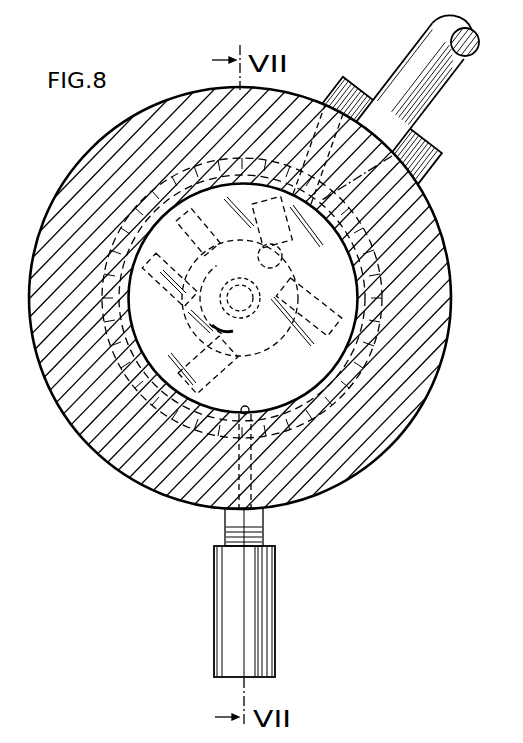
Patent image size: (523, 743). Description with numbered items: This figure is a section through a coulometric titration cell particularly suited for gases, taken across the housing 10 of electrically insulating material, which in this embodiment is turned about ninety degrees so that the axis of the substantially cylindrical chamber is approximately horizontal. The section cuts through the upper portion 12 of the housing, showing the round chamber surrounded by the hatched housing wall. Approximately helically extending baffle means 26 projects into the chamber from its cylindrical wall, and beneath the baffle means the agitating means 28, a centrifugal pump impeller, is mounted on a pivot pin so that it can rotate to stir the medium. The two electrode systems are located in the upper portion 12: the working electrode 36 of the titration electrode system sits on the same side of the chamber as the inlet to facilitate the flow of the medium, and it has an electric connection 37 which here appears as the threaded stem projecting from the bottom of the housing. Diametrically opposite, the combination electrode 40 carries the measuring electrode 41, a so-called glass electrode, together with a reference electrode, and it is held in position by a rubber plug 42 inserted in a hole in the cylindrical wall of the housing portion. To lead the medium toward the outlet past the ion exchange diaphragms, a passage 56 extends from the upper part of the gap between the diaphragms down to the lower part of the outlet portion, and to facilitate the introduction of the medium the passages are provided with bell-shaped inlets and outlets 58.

The housing 10 is at (382, 457).
The upper portion 12 is at (449, 254).
The baffle means 26 is at (197, 208).
The agitating means 28 is at (286, 330).
The working electrode 36 is at (247, 392).
The electric connection 37 is at (275, 592).
The combination electrode 40 is at (403, 58).
The measuring electrode 41 is at (299, 252).
The rubber plug 42 is at (424, 166).
The passage 56 is at (140, 333).
The bell-shaped inlets and outlets 58 is at (246, 412).